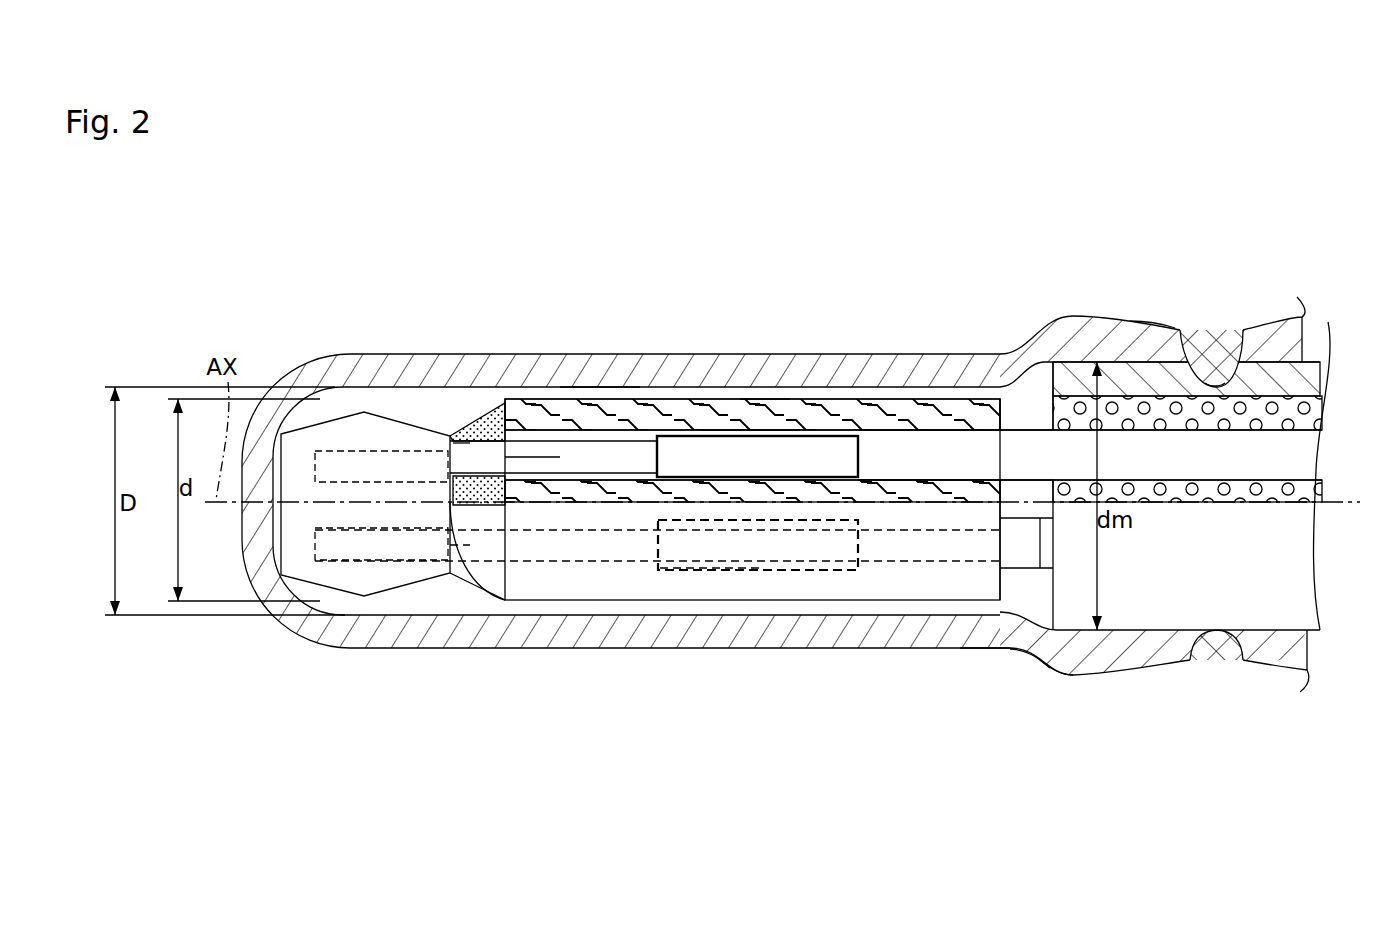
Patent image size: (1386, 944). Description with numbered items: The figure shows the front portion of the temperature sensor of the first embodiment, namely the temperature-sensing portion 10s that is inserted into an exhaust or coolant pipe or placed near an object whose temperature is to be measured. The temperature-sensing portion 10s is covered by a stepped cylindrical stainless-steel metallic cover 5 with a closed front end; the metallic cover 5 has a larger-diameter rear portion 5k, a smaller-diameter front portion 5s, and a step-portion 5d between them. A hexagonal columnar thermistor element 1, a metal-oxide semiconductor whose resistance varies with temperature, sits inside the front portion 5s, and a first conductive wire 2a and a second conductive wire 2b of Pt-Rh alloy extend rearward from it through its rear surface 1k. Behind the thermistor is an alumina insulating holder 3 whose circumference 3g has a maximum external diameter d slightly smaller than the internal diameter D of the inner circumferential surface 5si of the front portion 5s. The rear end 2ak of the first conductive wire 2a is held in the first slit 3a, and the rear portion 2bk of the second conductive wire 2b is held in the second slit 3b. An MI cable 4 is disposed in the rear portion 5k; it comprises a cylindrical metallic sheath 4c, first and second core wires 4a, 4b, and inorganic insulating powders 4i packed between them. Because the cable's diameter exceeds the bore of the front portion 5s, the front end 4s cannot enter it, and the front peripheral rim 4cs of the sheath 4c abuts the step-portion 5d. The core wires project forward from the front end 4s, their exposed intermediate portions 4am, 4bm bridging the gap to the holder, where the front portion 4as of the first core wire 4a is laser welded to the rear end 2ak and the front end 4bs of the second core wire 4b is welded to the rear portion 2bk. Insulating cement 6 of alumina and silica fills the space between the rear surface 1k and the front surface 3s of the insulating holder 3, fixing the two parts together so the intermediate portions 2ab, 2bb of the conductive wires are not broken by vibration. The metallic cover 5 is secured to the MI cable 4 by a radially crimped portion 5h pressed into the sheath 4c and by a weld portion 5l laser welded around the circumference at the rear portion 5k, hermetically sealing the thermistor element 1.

The thermistor element 1 is at (367, 430).
The rear surface 1k is at (447, 575).
The first conductive wire 2a is at (583, 398).
The intermediate portion 2ab is at (470, 460).
The rear end 2ak is at (805, 462).
The second conductive wire 2b is at (590, 547).
The intermediate portion 2bb is at (478, 560).
The rear portion 2bk is at (795, 550).
The insulating holder 3 is at (742, 492).
The first slit 3a is at (938, 443).
The second slit 3b is at (883, 556).
The circumference 3g is at (596, 370).
The front surface 3s is at (495, 550).
The MI cable 4 is at (1083, 630).
The first core wire 4a is at (890, 447).
The front portion 4as is at (755, 431).
The intermediate portion 4am is at (1027, 450).
The second core wire 4b is at (922, 556).
The front end 4bs is at (705, 568).
The intermediate portion 4bm is at (1020, 550).
The sheath 4c is at (1085, 385).
The front peripheral rim 4cs is at (1033, 637).
The inorganic insulating powders 4i is at (1125, 396).
The front end 4s is at (1013, 612).
The metallic cover 5 is at (835, 392).
The front portion 5s is at (765, 395).
The inner circumferential surface 5si is at (550, 460).
The step-portion 5d is at (1052, 647).
The crimped portion 5h is at (1198, 372).
The rear portion 5k is at (1140, 385).
The weld portion 5l is at (1213, 368).
The cement 6 is at (472, 430).
The temperature-sensing portion 10s is at (850, 210).